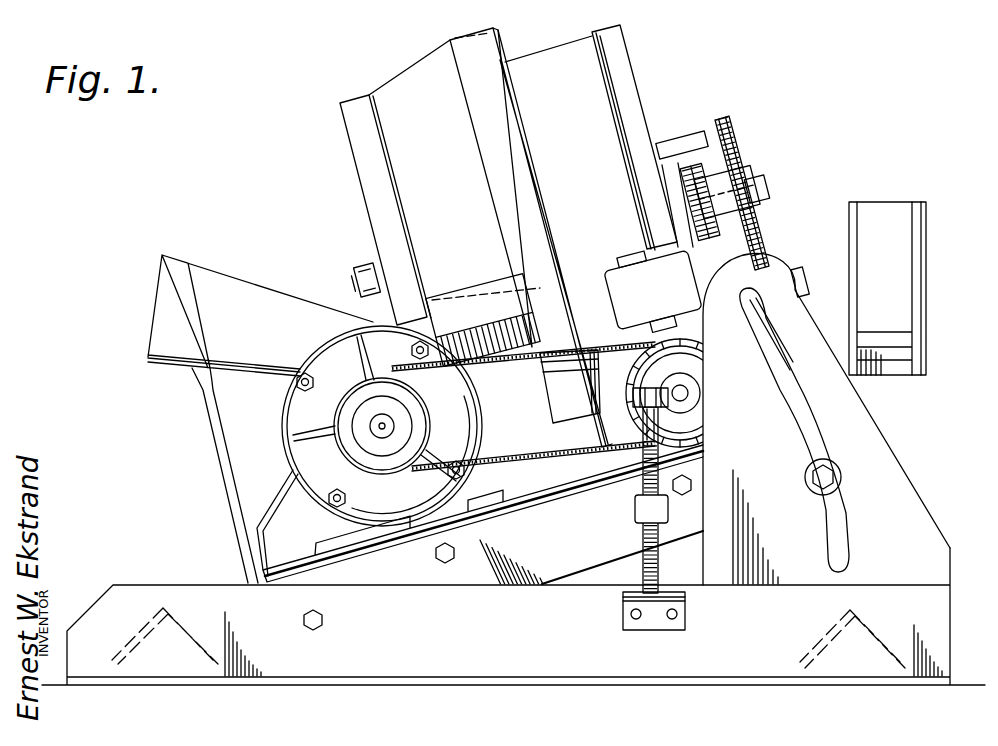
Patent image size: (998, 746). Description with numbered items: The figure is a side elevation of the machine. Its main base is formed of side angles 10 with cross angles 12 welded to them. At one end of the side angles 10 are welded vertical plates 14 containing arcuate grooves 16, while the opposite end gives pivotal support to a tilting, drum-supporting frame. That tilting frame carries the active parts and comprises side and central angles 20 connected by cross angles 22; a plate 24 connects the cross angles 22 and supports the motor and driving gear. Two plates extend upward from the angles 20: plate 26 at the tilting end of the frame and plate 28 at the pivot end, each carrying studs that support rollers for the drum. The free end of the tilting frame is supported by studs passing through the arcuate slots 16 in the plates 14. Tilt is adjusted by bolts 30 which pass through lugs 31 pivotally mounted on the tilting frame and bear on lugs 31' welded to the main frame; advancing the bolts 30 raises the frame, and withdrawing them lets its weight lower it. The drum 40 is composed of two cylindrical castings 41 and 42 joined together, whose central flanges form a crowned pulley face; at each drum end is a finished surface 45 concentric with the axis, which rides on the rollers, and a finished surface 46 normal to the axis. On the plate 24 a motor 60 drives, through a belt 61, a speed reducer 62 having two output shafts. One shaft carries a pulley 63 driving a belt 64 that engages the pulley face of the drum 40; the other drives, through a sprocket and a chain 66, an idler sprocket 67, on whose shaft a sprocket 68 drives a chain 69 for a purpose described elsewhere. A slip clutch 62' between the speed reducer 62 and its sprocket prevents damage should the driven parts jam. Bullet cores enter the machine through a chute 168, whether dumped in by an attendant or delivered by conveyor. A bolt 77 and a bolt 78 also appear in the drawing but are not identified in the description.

The side angles 10 is at (951, 620).
The cross angles 12 is at (137, 628).
The vertical plates 14 is at (912, 493).
The arcuate grooves 16 is at (799, 410).
The side and central angles 20 is at (548, 580).
The cross angles 22 is at (246, 565).
The plate 24 is at (393, 543).
The plate 26 is at (680, 213).
The plate 28 is at (366, 302).
The bolts 30 is at (643, 540).
The lugs 31 is at (633, 455).
The lugs 31' is at (678, 611).
The drum 40 is at (428, 68).
The cylindrical casting 41 is at (409, 94).
The cylindrical casting 42 is at (548, 80).
The finished surface 45 is at (355, 97).
The finished surface 46 is at (340, 108).
The motor 60 is at (287, 407).
The belt 61 is at (498, 456).
The speed reducer 62 is at (653, 291).
The slip clutch 62' is at (697, 355).
The pulley 63 is at (540, 290).
The belt 64 is at (515, 183).
The chain 66 is at (756, 227).
The idler sprocket 67 is at (733, 136).
The sprocket 68 is at (709, 193).
The chain 69 is at (716, 173).
The clamp bolt 77 is at (841, 477).
The bolt 78 is at (323, 620).
The chute 168 is at (218, 248).